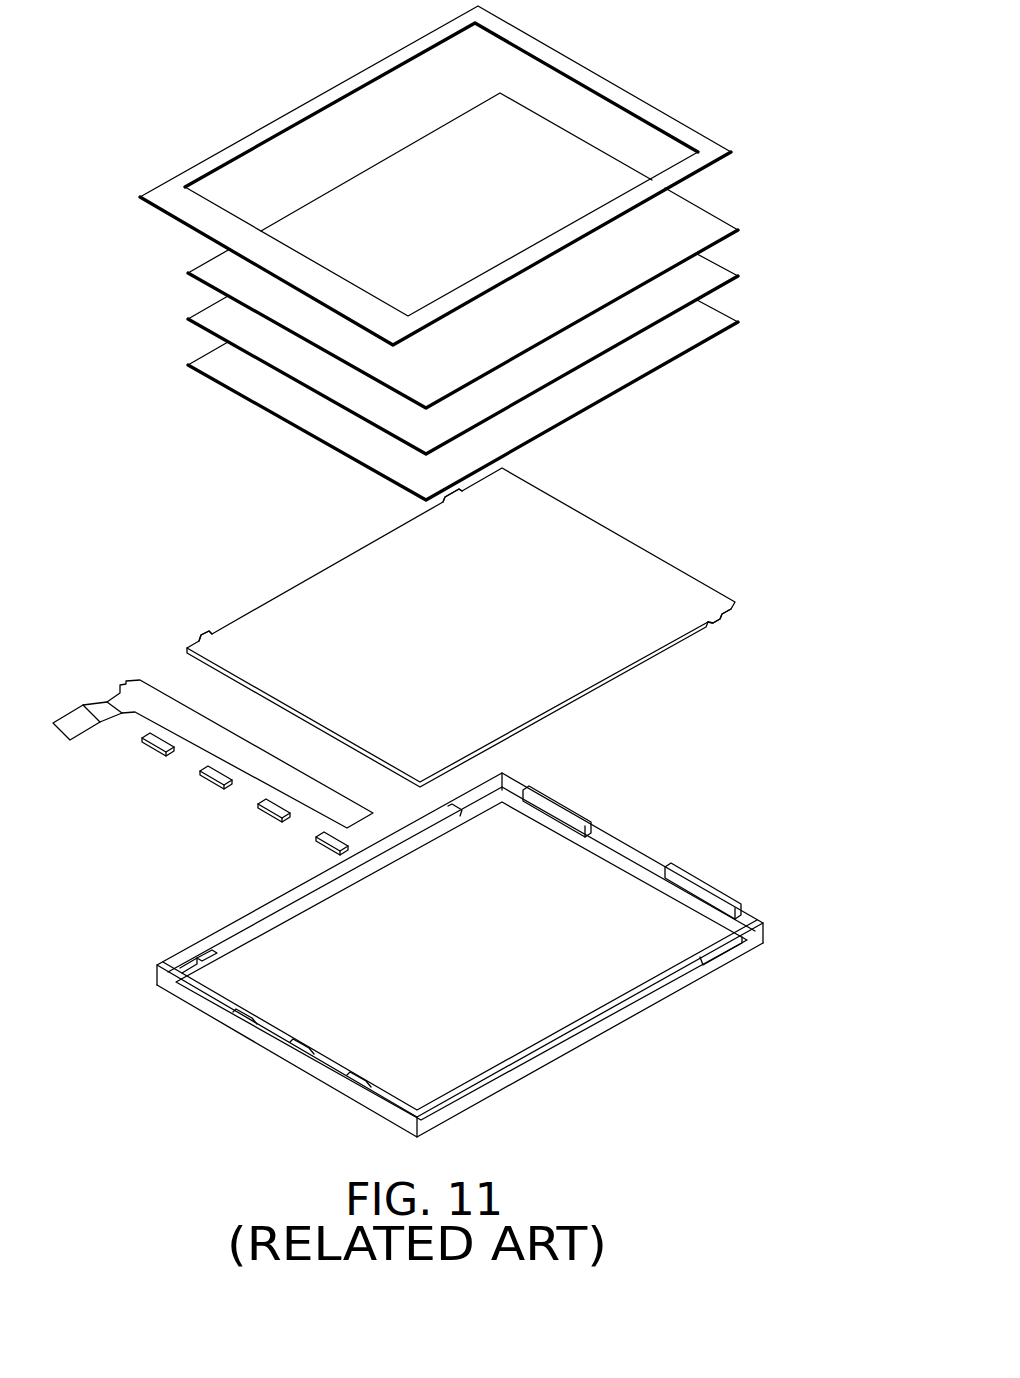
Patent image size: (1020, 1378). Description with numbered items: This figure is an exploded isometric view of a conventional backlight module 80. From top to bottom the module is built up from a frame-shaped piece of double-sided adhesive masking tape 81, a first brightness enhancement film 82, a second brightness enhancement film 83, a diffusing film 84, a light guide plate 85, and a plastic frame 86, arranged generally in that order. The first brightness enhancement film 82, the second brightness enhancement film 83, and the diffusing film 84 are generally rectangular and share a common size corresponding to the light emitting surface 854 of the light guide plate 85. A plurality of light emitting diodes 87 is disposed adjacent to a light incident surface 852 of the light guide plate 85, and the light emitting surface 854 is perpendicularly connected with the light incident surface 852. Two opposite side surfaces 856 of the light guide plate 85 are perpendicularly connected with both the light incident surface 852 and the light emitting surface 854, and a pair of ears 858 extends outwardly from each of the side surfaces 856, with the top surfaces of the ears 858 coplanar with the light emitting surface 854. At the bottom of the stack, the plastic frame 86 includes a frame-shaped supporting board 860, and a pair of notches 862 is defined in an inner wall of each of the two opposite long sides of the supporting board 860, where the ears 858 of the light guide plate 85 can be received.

The backlight module 80 is at (420, 571).
The double-sided adhesive masking tape 81 is at (651, 106).
The first brightness enhancement film 82 is at (697, 237).
The second brightness enhancement film 83 is at (697, 282).
The diffusing film 84 is at (697, 328).
The light guide plate 85 is at (442, 635).
The light incident surface 852 is at (373, 756).
The light emitting surface 854 is at (590, 540).
The side surfaces 856 is at (272, 590).
The ears 858 is at (205, 631).
The light emitting diodes 87 is at (151, 756).
The plastic frame 86 is at (435, 955).
The supporting board 860 is at (292, 913).
The notches 862 is at (205, 958).